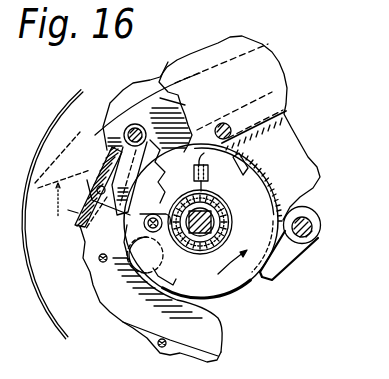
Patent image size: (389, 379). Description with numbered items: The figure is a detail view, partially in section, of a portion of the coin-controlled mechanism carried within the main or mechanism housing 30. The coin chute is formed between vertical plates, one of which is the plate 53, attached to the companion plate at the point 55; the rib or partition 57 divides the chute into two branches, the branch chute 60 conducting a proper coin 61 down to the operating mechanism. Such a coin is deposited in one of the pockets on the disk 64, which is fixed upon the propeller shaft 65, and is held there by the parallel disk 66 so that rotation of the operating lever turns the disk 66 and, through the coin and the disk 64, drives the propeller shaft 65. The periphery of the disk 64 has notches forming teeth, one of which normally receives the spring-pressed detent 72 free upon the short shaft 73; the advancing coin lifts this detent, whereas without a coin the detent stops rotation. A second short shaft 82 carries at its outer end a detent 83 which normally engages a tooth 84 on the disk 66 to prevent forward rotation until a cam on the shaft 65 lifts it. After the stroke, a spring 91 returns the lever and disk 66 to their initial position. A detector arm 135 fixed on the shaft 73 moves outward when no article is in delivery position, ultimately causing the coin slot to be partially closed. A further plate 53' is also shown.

The main or mechanism housing 30 is at (48, 131).
The vertical plate 53 is at (207, 128).
The cover plate 53' is at (195, 339).
The attachment point 55 is at (231, 125).
The rib or partition 57 is at (185, 104).
The branch chute 60 is at (188, 172).
The coin 61 is at (135, 275).
The disk 64 is at (243, 289).
The propeller shaft 65 is at (208, 221).
The disk 66 is at (220, 287).
The spring-pressed detent 72 is at (107, 150).
The short shaft 73 is at (131, 125).
The short shaft 82 is at (305, 218).
The detent 83 is at (284, 251).
The tooth 84 is at (250, 163).
The spring 91 is at (229, 213).
The detector arm 135 is at (59, 210).